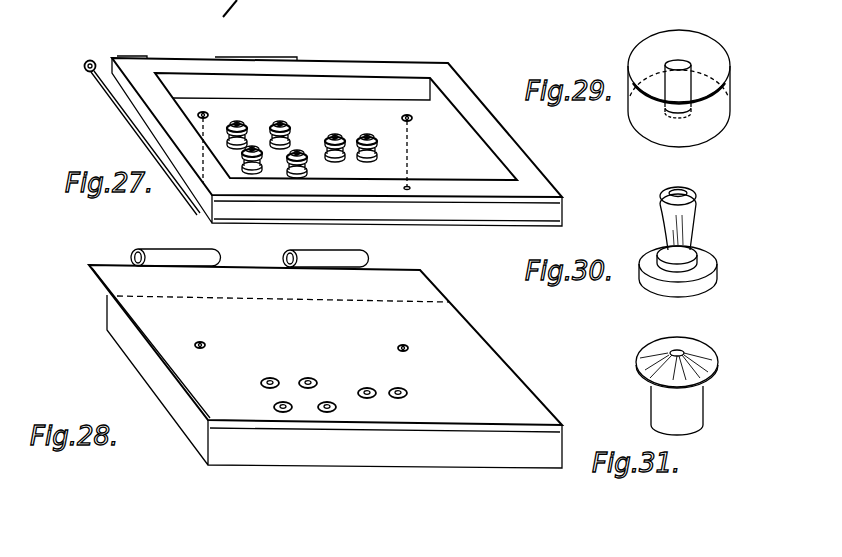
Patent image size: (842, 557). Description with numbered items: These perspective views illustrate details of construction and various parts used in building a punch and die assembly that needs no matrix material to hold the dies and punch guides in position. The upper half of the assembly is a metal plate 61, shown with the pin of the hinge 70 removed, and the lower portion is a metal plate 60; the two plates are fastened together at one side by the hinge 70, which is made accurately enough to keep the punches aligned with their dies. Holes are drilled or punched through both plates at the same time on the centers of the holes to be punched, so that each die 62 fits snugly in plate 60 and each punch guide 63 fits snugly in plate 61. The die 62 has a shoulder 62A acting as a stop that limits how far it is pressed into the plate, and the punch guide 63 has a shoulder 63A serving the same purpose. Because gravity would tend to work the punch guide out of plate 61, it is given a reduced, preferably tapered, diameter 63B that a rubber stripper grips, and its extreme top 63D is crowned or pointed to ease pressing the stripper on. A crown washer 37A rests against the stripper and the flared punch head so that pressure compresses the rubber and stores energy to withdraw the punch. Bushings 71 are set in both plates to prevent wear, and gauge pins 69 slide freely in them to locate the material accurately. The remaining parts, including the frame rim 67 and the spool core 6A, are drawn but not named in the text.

In FIG. 27, the plate 61 is at (295, 108).
In FIG. 27, the frame opening rim 67 is at (455, 87).
In FIG. 27, the hinge 70 is at (143, 120).
In FIG. 28, the hinge 70 is at (157, 250).
In FIG. 27, the bushing 71 is at (210, 116).
In FIG. 28, the bushing 71 is at (206, 345).
In FIG. 27, the pin 69 is at (209, 113).
In FIG. 27, the crown washer 37A is at (262, 146).
In FIG. 28, the plate 60 is at (487, 364).
In FIG. 28, the die 62 is at (308, 379).
In FIG. 31, the die 62 is at (698, 410).
In FIG. 31, the shoulder 62A is at (705, 350).
In FIG. 29, the spool core 6A is at (707, 38).
In FIG. 30, the punch guide 63 is at (712, 288).
In FIG. 30, the shoulder 63A is at (705, 254).
In FIG. 30, the reduced diameter 63B is at (693, 228).
In FIG. 30, the crowned top 63D is at (692, 191).